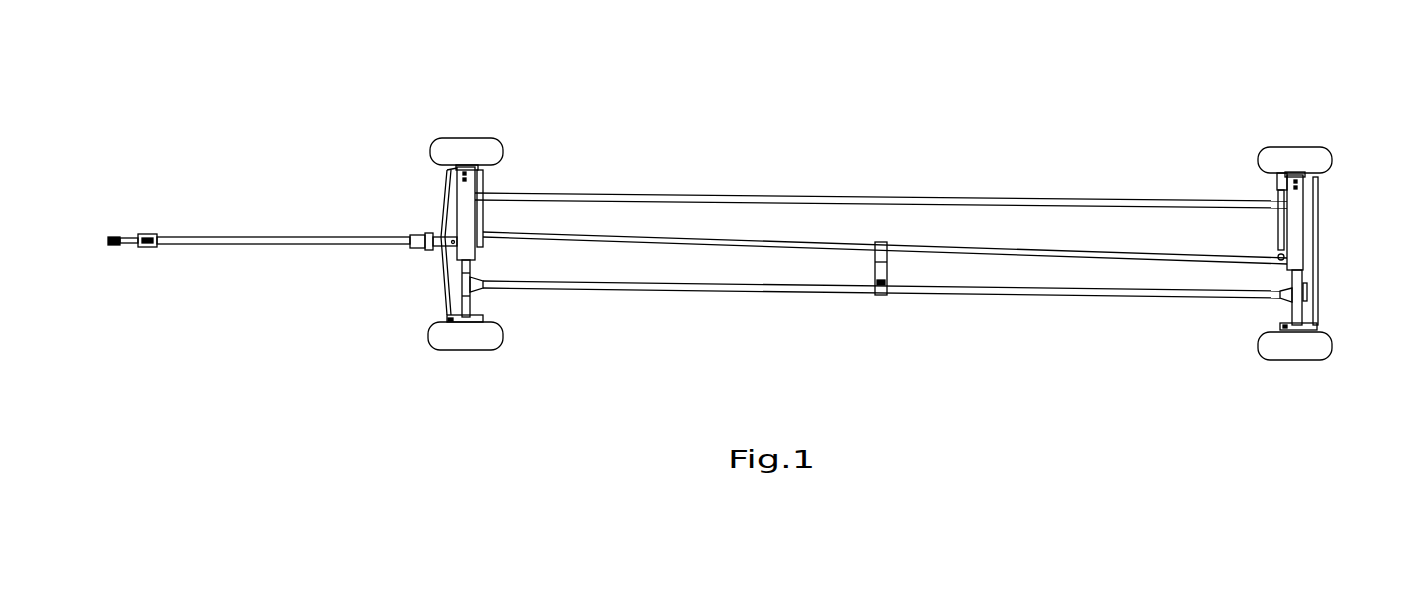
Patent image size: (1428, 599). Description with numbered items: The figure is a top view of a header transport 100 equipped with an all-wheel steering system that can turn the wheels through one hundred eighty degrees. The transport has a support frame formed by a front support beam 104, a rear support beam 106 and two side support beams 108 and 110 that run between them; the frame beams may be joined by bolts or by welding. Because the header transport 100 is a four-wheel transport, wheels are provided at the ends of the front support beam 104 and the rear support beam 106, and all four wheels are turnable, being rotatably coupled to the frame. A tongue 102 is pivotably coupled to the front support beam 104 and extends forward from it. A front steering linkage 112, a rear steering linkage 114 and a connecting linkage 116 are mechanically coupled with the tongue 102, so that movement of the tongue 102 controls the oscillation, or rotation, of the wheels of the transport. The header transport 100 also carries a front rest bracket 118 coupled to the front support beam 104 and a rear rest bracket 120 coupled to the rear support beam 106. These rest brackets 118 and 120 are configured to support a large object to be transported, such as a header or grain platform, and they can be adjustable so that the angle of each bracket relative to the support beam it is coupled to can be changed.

The header transport 100 is at (696, 124).
The tongue 102 is at (240, 235).
The front support beam 104 is at (478, 305).
The rear support beam 106 is at (1282, 312).
The side support beam 108 is at (935, 203).
The side support beam 110 is at (835, 295).
The front steering linkage 112 is at (431, 281).
The rear steering linkage 114 is at (1330, 257).
The connecting linkage 116 is at (1054, 252).
The front rest bracket 118 is at (460, 192).
The rear rest bracket 120 is at (1305, 210).